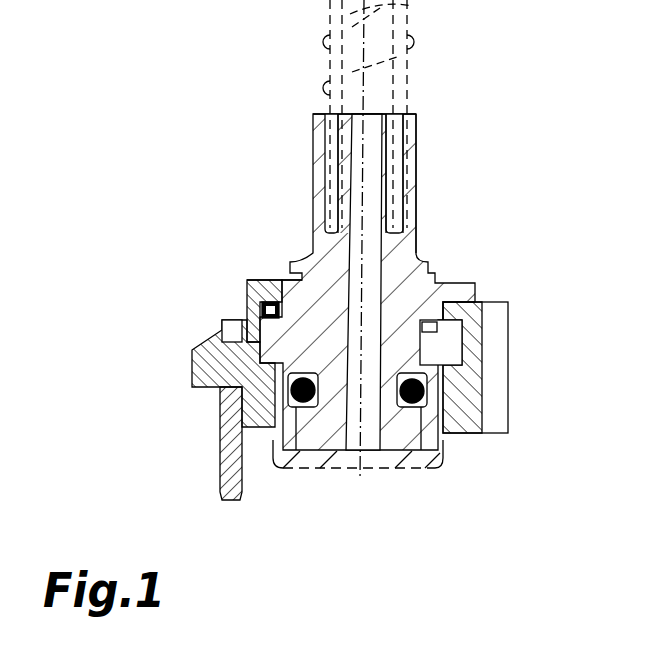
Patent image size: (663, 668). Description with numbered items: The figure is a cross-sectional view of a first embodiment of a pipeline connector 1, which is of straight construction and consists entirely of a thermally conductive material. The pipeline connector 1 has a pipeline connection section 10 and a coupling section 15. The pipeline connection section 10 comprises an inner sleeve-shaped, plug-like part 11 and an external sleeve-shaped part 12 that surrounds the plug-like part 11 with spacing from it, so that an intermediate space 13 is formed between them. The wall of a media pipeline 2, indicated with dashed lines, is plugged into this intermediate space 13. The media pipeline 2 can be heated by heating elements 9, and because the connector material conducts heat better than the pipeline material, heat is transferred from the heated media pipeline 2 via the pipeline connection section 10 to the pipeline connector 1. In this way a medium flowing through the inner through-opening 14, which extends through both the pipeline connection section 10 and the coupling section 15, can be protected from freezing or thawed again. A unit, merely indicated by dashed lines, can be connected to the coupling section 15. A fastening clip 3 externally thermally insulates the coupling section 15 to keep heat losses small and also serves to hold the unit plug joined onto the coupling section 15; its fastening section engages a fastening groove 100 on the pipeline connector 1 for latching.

The pipeline connector 1 is at (242, 126).
The media pipeline 2 is at (323, 42).
The fastening clip 3 is at (215, 353).
The heating elements 9 is at (414, 42).
The pipeline connection section 10 is at (305, 176).
The sleeve-shaped, plug-like part 11 is at (400, 146).
The external sleeve-shaped part 12 is at (410, 165).
The intermediate space 13 is at (400, 212).
The inner through-opening 14 is at (372, 258).
The coupling section 15 is at (287, 378).
The fastening groove 100 is at (247, 300).